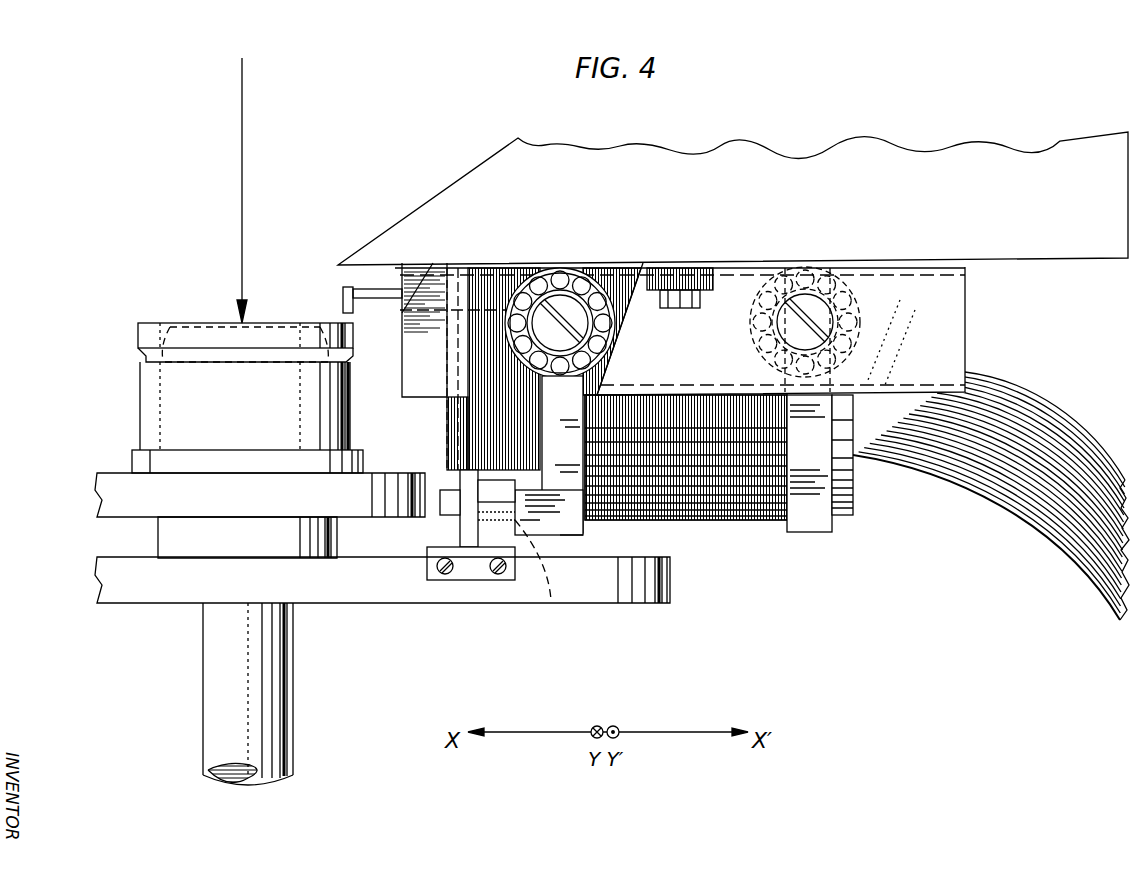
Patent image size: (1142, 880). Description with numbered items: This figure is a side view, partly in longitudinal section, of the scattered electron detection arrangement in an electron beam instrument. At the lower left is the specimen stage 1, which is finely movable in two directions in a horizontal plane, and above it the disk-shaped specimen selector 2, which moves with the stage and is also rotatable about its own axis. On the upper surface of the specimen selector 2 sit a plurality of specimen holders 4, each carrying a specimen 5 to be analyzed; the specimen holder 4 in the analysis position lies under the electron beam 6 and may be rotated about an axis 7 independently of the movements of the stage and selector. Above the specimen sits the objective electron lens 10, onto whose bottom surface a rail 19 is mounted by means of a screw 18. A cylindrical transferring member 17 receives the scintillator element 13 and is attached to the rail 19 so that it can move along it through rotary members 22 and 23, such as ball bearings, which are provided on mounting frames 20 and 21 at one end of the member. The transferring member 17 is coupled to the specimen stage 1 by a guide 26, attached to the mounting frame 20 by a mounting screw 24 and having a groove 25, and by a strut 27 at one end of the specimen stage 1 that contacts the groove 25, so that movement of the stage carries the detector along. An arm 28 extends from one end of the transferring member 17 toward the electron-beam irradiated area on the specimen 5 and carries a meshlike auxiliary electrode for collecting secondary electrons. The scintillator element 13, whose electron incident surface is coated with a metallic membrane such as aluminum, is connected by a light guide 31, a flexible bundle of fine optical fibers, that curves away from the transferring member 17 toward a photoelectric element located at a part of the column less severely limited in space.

The specimen stage 1 is at (655, 604).
The disk-shaped specimen selector 2 is at (367, 507).
The specimen holder 4 is at (172, 418).
The specimen 5 is at (205, 325).
The electron beam 6 is at (242, 123).
The axis 7 is at (278, 691).
The objective electron lens 10 is at (716, 192).
The scintillator element 13 is at (525, 410).
The cylindrical transferring member 17 is at (735, 522).
The screw 18 is at (685, 310).
The rail 19 is at (965, 325).
The mounting frame 20 is at (583, 530).
The mounting frame 21 is at (815, 527).
The rotary member 22 is at (553, 276).
The rotary member 23 is at (797, 264).
The mounting screw 24 is at (551, 600).
The groove 25 is at (452, 503).
The guide 26 is at (492, 505).
The strut 27 is at (463, 530).
The arm 28 is at (343, 296).
The light guide 31 is at (1005, 500).